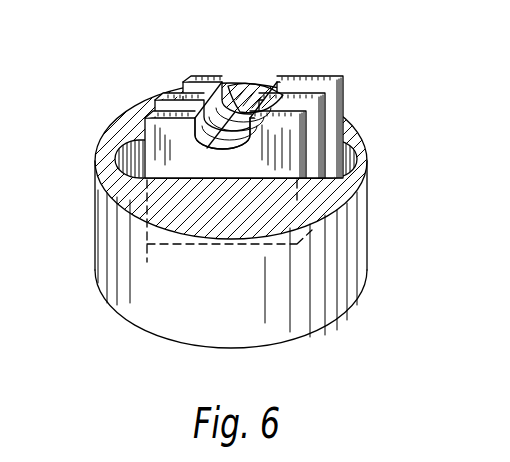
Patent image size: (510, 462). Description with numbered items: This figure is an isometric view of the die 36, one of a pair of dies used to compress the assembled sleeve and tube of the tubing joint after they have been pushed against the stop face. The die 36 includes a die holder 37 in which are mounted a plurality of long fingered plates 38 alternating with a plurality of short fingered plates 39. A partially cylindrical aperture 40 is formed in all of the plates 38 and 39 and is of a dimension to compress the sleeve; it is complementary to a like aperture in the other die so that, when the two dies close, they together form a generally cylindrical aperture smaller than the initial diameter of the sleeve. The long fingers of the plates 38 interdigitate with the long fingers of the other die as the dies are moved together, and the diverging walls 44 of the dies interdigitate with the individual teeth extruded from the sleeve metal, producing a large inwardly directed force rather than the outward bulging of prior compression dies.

The die 36 is at (348, 162).
The die holder 37 is at (98, 246).
The long fingered plates 38 is at (163, 104).
The short fingered plates 39 is at (307, 150).
The partially cylindrical aperture 40 is at (215, 147).
The diverging walls 44 is at (230, 84).